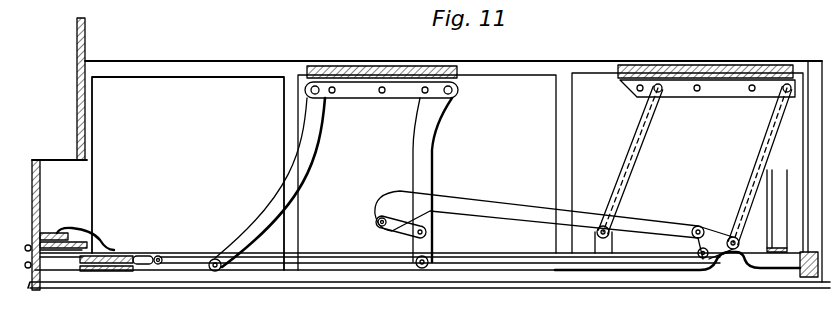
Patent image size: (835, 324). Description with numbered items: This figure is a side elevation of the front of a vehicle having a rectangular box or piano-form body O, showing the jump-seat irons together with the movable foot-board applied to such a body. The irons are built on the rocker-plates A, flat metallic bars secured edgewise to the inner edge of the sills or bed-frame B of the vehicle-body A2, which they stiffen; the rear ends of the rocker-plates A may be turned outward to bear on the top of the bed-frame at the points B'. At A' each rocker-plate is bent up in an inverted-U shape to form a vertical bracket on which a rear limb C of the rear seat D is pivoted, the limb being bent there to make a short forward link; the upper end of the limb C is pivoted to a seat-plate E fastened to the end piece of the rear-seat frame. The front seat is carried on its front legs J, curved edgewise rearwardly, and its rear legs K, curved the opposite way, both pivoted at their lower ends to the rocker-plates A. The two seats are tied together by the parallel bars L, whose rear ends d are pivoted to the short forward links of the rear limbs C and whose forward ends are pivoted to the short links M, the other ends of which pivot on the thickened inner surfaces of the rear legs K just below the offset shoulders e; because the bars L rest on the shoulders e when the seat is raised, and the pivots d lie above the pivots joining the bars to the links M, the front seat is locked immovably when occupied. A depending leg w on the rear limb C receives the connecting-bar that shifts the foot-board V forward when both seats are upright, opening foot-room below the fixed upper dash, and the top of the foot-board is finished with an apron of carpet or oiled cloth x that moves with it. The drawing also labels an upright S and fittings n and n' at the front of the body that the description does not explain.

The rear seat D is at (750, 52).
The post S is at (88, 89).
The bracket n is at (56, 207).
The bracket bars n' is at (63, 226).
The apron of carpet or oiled cloth x is at (84, 231).
The foot-board V is at (92, 252).
The body O is at (188, 173).
The vehicle-body A2 is at (687, 163).
The sills or bed-frame B is at (429, 290).
The rocker-plates A is at (480, 279).
The seat-plates E is at (718, 97).
The front legs J is at (308, 186).
The rear legs K is at (428, 159).
The parallel bars L is at (538, 201).
The short links M is at (385, 230).
The shoulder e is at (428, 221).
The brackets A' is at (739, 196).
The rear ends of parallel bars d is at (715, 230).
The rear limbs C is at (727, 231).
The depending leg w is at (698, 250).
The bearing points B' is at (783, 211).